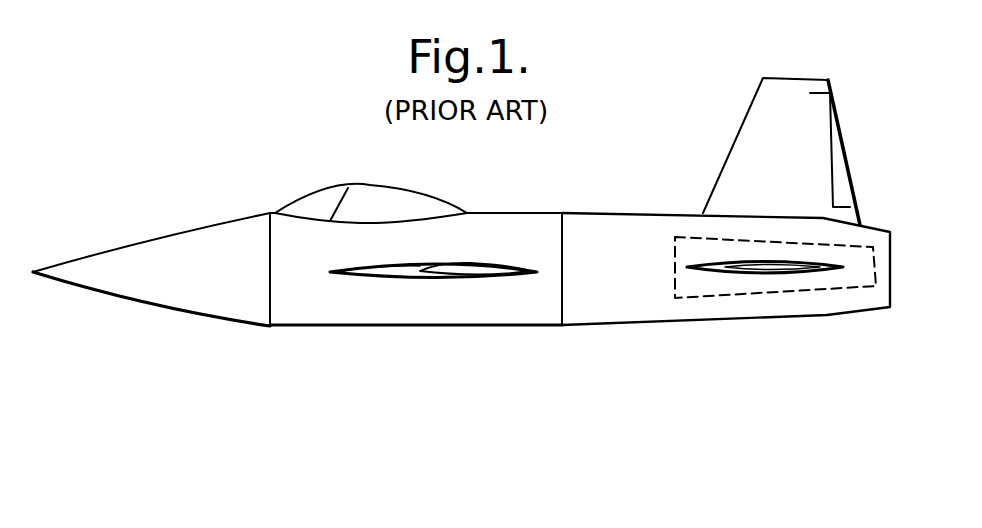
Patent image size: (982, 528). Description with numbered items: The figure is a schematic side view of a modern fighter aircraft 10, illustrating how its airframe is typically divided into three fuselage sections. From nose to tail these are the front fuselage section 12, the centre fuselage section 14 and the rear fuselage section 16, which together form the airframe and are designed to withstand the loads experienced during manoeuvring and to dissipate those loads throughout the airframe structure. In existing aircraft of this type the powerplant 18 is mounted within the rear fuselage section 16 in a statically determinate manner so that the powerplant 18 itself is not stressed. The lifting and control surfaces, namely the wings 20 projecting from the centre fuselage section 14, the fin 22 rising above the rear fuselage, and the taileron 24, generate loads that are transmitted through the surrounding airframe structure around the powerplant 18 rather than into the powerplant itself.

The fighter aircraft 10 is at (462, 225).
The front fuselage section 12 is at (217, 293).
The centre fuselage section 14 is at (338, 300).
The rear fuselage section 16 is at (633, 300).
The powerplant 18 is at (808, 287).
The wings 20 is at (463, 274).
The fin 22 is at (793, 140).
The taileron 24 is at (740, 274).